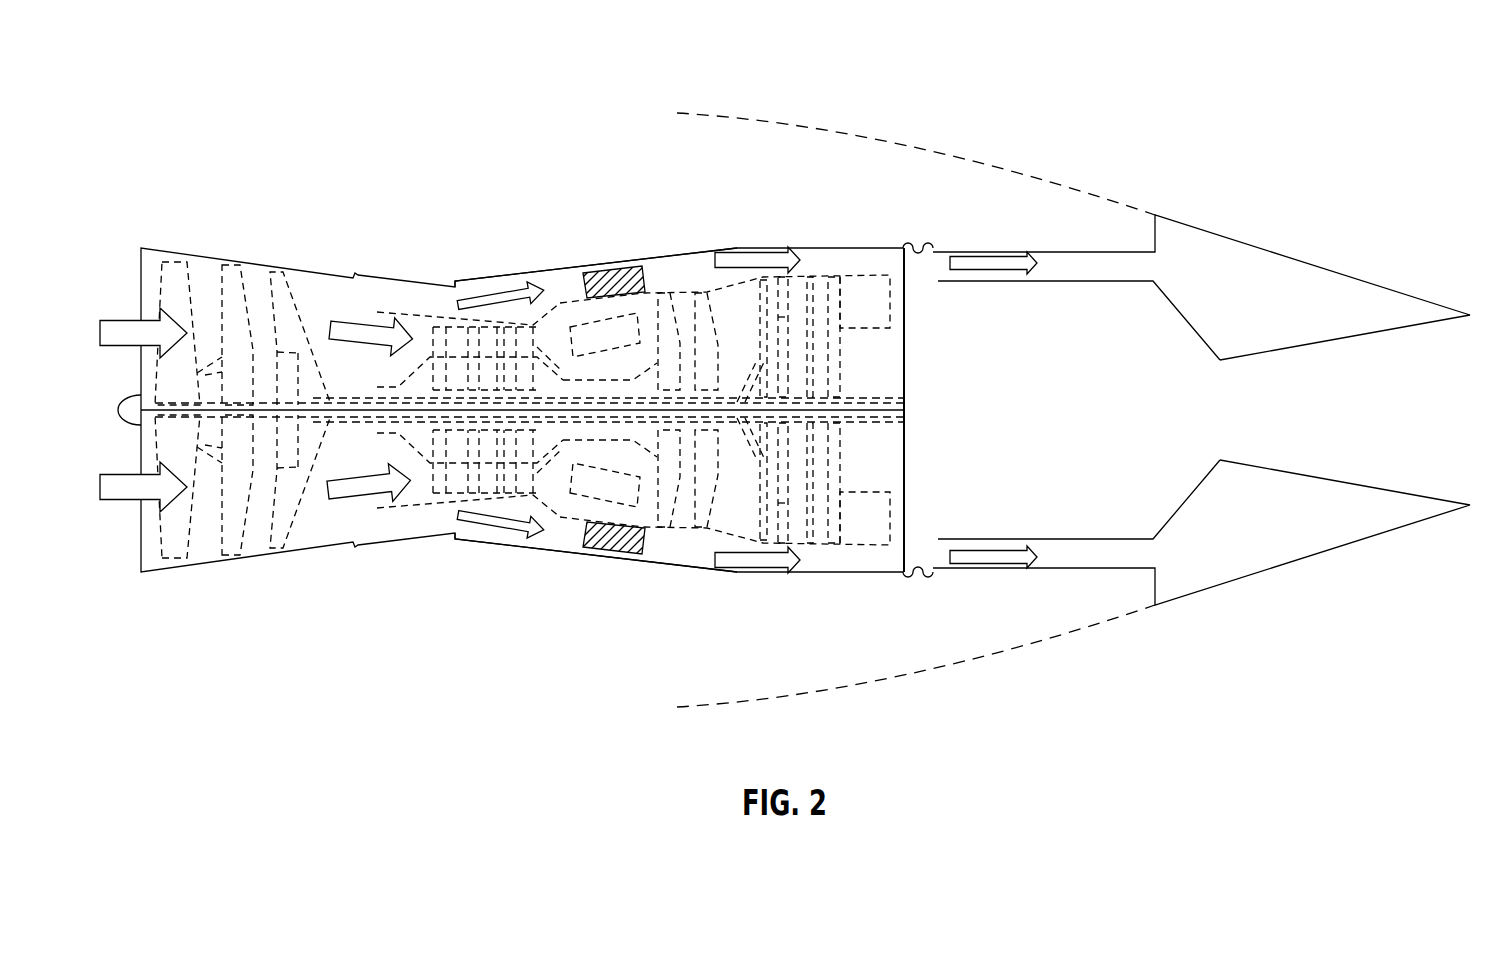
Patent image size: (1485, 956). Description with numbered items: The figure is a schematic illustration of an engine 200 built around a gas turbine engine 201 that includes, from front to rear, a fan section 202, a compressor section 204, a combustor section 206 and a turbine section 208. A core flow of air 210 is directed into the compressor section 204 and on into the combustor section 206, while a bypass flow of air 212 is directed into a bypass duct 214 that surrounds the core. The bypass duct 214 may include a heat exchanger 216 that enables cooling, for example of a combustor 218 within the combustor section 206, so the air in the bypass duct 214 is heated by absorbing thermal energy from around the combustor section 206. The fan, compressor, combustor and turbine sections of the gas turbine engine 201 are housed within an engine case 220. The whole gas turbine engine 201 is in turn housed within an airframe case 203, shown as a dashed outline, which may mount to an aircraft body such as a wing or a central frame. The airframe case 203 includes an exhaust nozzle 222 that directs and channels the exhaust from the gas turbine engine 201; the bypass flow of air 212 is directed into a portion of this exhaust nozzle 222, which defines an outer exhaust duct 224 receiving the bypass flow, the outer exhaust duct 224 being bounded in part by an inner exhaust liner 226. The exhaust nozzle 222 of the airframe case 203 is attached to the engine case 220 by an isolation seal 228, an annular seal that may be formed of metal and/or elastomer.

The engine 200 is at (785, 381).
The gas turbine engine 201 is at (390, 276).
The fan section 202 is at (172, 598).
The airframe case 203 is at (787, 120).
The compressor section 204 is at (447, 612).
The combustor section 206 is at (674, 598).
The turbine section 208 is at (764, 593).
The core flow of air 210 is at (372, 497).
The bypass flow of air 212 is at (489, 538).
The bypass duct 214 is at (559, 548).
The heat exchanger 216 is at (618, 268).
The combustor 218 is at (578, 325).
The engine case 220 is at (810, 248).
The exhaust nozzle 222 is at (960, 251).
The outer exhaust duct 224 is at (1053, 273).
The inner exhaust liner 226 is at (1110, 283).
The isolation seal 228 is at (912, 241).